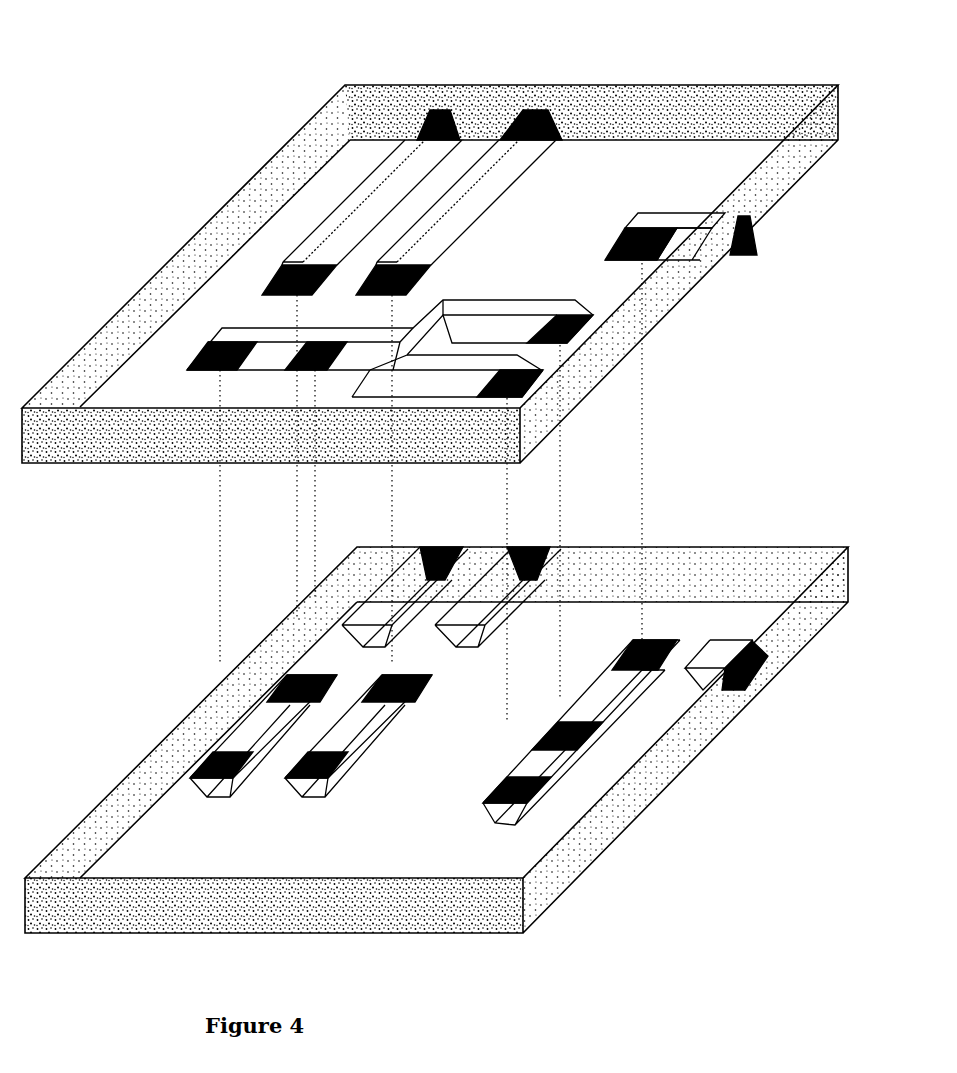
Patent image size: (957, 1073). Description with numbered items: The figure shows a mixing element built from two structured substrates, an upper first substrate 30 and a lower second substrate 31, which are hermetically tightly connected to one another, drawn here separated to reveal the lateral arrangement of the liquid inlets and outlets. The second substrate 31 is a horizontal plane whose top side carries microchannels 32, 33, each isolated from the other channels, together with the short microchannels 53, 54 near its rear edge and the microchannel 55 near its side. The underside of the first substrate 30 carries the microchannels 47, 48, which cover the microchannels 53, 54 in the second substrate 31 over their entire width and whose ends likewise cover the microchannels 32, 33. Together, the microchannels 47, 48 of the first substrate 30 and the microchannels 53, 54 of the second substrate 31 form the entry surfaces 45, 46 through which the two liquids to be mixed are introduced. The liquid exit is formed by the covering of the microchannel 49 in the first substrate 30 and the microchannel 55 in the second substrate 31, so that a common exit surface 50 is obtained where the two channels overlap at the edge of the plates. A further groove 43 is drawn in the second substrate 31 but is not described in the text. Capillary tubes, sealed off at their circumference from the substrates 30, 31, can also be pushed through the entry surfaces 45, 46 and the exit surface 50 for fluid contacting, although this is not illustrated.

The first substrate 30 is at (673, 282).
The second substrate 31 is at (788, 657).
The microchannel 32 is at (263, 725).
The microchannel 33 is at (348, 730).
The channel 43 is at (623, 707).
The entry surface 45 is at (462, 135).
The entry surface 46 is at (545, 108).
The microchannel 47 is at (353, 175).
The microchannel 48 is at (472, 205).
The microchannel 49 is at (673, 203).
The exit surface 50 is at (747, 227).
The microchannel 53 is at (363, 600).
The microchannel 54 is at (473, 610).
The microchannel 55 is at (720, 648).